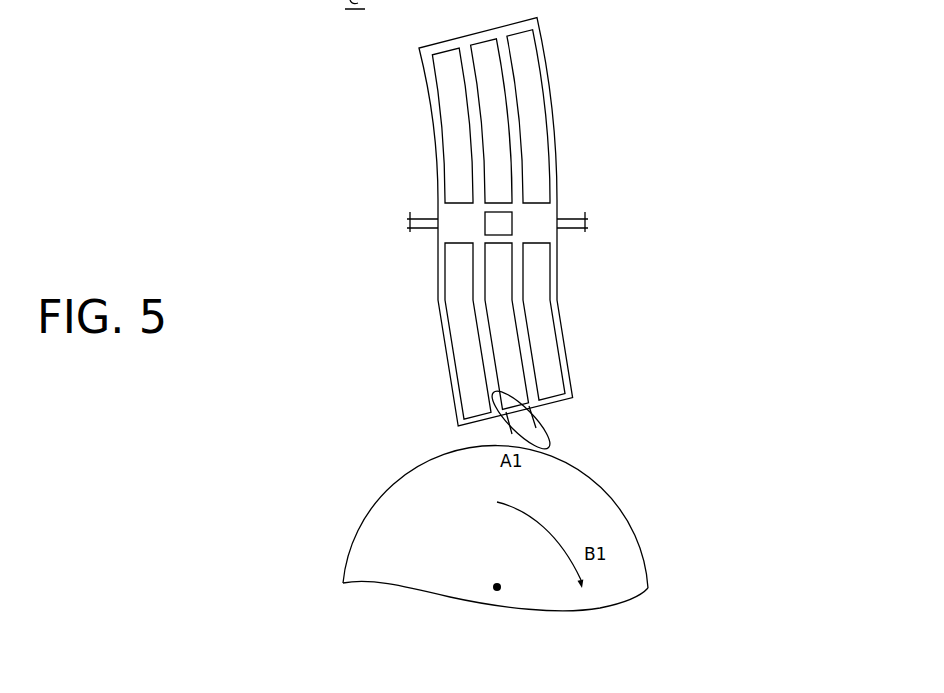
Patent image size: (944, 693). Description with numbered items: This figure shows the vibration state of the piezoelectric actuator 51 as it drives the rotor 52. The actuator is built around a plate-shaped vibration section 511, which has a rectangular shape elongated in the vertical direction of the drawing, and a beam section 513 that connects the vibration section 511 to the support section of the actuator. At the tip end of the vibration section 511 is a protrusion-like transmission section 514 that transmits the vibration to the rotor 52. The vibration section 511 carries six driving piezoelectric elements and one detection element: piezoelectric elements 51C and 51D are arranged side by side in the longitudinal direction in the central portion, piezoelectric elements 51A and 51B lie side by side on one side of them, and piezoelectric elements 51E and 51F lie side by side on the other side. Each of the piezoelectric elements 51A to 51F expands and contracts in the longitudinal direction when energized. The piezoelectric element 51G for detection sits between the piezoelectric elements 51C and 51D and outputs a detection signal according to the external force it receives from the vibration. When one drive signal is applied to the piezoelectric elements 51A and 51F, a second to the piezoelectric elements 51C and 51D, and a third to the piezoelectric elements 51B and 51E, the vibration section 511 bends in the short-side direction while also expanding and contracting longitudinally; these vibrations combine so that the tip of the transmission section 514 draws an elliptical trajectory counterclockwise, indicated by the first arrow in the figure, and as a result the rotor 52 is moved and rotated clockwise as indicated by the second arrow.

The piezoelectric actuator 51 is at (553, 65).
The vibration section 511 is at (438, 167).
The beam section 513 is at (407, 222).
The transmission section 514 is at (540, 419).
The piezoelectric element 51A is at (540, 341).
The piezoelectric element 51B is at (537, 125).
The piezoelectric element 51C is at (510, 371).
The piezoelectric element 51D is at (497, 79).
The piezoelectric element 51E is at (462, 340).
The piezoelectric element 51F is at (455, 114).
The piezoelectric element for detection 51G is at (498, 221).
The rotor 52 is at (347, 546).